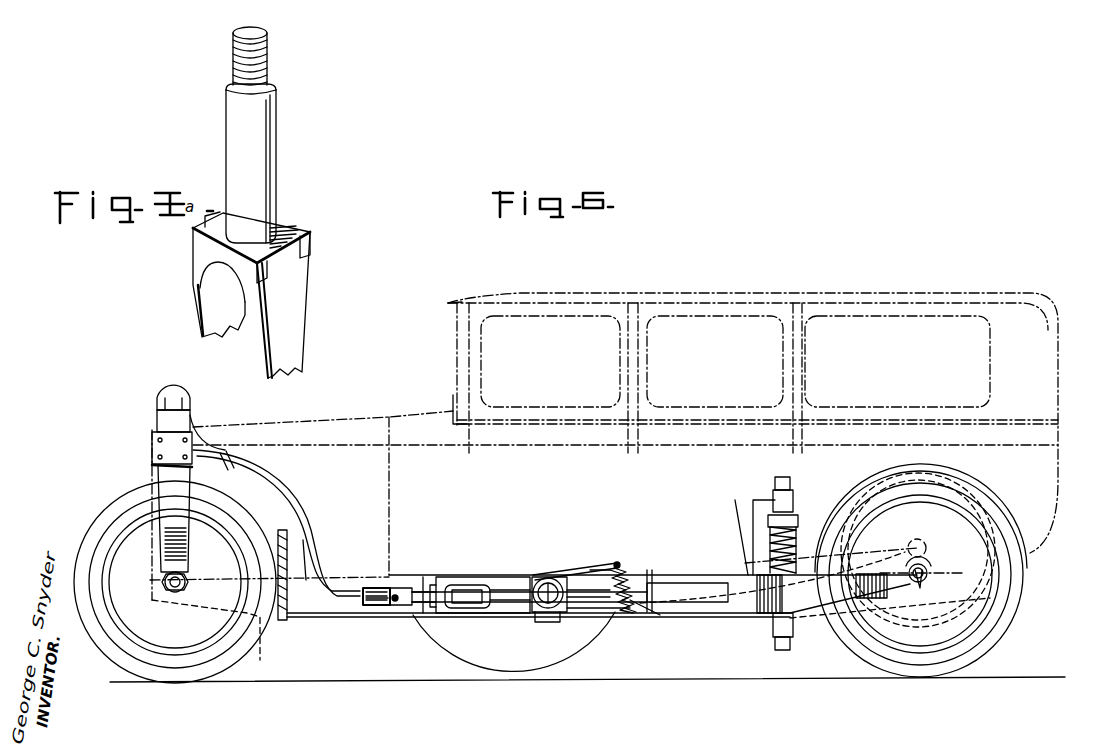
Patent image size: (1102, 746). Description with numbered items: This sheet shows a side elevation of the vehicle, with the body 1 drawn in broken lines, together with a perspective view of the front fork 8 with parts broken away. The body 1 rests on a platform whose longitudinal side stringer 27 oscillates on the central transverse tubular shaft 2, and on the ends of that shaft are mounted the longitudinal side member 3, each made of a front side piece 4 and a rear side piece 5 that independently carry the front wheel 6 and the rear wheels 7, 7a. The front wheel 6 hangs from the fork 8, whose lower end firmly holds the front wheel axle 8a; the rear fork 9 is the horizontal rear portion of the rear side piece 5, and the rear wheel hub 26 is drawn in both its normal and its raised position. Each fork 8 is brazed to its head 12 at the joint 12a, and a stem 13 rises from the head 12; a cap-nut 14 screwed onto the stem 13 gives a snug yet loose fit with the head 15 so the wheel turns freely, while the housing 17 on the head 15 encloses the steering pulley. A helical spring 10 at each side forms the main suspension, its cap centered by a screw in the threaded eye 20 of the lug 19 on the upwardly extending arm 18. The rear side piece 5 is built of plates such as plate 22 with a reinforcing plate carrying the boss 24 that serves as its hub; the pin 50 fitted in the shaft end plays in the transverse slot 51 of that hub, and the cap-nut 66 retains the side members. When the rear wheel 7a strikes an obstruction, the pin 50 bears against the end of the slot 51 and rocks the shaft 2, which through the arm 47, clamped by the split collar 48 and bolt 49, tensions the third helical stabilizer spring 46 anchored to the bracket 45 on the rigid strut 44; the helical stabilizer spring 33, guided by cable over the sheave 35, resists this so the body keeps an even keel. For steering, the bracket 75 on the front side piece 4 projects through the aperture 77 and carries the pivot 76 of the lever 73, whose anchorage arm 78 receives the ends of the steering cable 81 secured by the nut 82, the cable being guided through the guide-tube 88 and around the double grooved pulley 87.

In FIG. 6, the vehicle body 1 is at (625, 434).
In FIG. 6, the transverse tubular shaft 2 is at (540, 574).
In FIG. 6, the longitudinal side member 3 is at (262, 566).
In FIG. 6, the front side piece 4 is at (308, 532).
In FIG. 6, the rear side piece 5 is at (449, 614).
In FIG. 6, the front wheel 6 is at (108, 504).
In FIG. 6, the rear wheel 7 is at (995, 630).
In FIG. 6, the rear wheel 7a is at (848, 478).
In FIG. 4a, the fork 8 is at (295, 308).
In FIG. 6, the fork 8 is at (160, 530).
In FIG. 6, the front wheel axle 8a is at (163, 584).
In FIG. 6, the rear fork 9 is at (812, 614).
In FIG. 6, the helical spring 10 is at (798, 522).
In FIG. 4a, the head 12 is at (285, 214).
In FIG. 4a, the fork-to-head joint 12a is at (338, 212).
In FIG. 4a, the stem 13 is at (258, 120).
In FIG. 6, the cap-nut 14 is at (158, 394).
In FIG. 6, the head 15 is at (157, 418).
In FIG. 6, the housing 17 is at (157, 444).
In FIG. 6, the upwardly extending arm 18 is at (745, 520).
In FIG. 6, the lug 19 is at (767, 503).
In FIG. 6, the threaded eye 20 is at (790, 498).
In FIG. 6, the plate 22 is at (482, 576).
In FIG. 6, the boss 24 is at (566, 588).
In FIG. 6, the rear axle 26 is at (924, 552).
In FIG. 6, the side stringer 27 is at (262, 640).
In FIG. 6, the helical stabilizer spring 33 is at (268, 542).
In FIG. 6, the sheave 35 is at (288, 618).
In FIG. 6, the rigid strut 44 is at (650, 570).
In FIG. 6, the bracket 45 is at (650, 610).
In FIG. 6, the third helical stabilizer spring 46 is at (614, 566).
In FIG. 6, the arm 47 is at (598, 568).
In FIG. 6, the split collar 48 is at (534, 578).
In FIG. 6, the bolt 49 is at (545, 622).
In FIG. 6, the pin 50 is at (558, 604).
In FIG. 6, the transverse slot 51 is at (600, 610).
In FIG. 6, the cap-nut 66 is at (549, 578).
In FIG. 6, the lever 73 is at (466, 606).
In FIG. 6, the bracket 75 is at (445, 580).
In FIG. 6, the pivot 76 is at (466, 584).
In FIG. 6, the aperture 77 is at (504, 606).
In FIG. 6, the anchorage arm 78 is at (395, 602).
In FIG. 6, the steering cable 81 is at (196, 436).
In FIG. 6, the nut 82 is at (402, 587).
In FIG. 6, the double grooved pulley 87 is at (376, 604).
In FIG. 6, the guide-tube 88 is at (314, 552).